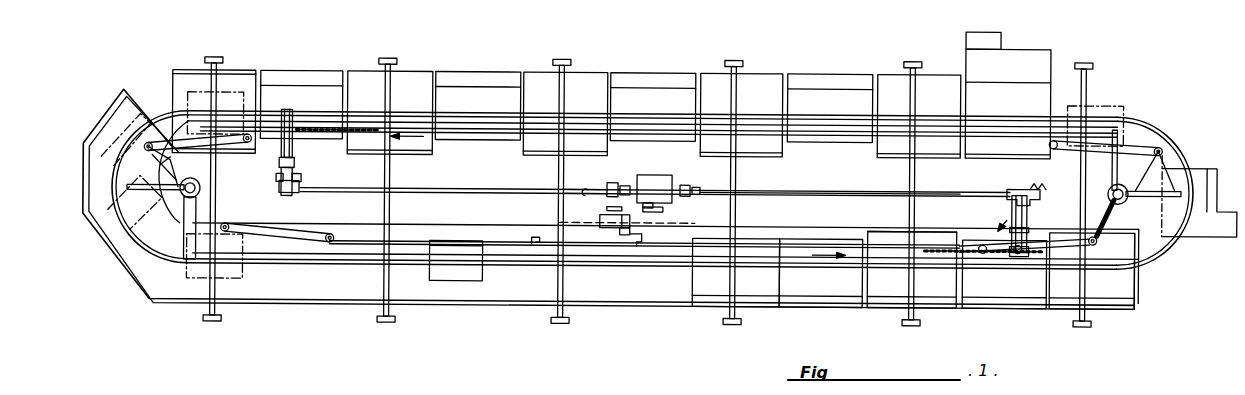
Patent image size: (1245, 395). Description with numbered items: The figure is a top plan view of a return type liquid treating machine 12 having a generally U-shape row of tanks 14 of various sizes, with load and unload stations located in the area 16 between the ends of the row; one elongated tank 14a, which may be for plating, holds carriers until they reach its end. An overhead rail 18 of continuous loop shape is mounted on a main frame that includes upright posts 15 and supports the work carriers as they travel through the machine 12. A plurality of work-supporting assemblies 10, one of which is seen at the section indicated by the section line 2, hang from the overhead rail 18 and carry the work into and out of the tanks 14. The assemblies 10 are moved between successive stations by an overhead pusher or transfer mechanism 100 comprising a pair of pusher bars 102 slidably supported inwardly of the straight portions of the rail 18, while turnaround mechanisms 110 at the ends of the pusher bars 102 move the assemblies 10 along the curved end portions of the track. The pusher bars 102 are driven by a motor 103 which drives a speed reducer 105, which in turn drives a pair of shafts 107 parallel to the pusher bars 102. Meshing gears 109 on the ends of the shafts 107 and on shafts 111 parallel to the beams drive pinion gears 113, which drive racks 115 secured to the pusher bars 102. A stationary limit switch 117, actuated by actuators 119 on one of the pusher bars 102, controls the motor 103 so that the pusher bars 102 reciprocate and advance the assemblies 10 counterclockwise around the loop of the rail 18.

The work-supporting assembly 10 is at (461, 292).
The liquid treating machine 12 is at (756, 188).
The tanks 14 is at (805, 73).
The elongated tank 14a is at (262, 310).
The upright posts 15 is at (742, 322).
The load and unload area 16 is at (1203, 146).
The overhead rail 18 is at (877, 263).
The section line 2 is at (424, 333).
The transfer mechanism 100 is at (405, 238).
The pusher bars 102 is at (455, 136).
The motor 103 is at (604, 216).
The speed reducer 105 is at (663, 166).
The shafts 107 is at (820, 190).
The meshing gears 109 is at (277, 182).
The turnaround mechanisms 110 is at (203, 178).
The shafts 111 is at (1010, 216).
The pinion gears 113 is at (283, 112).
The racks 115 is at (318, 130).
The limit switch 117 is at (622, 236).
The actuators 119 is at (537, 243).